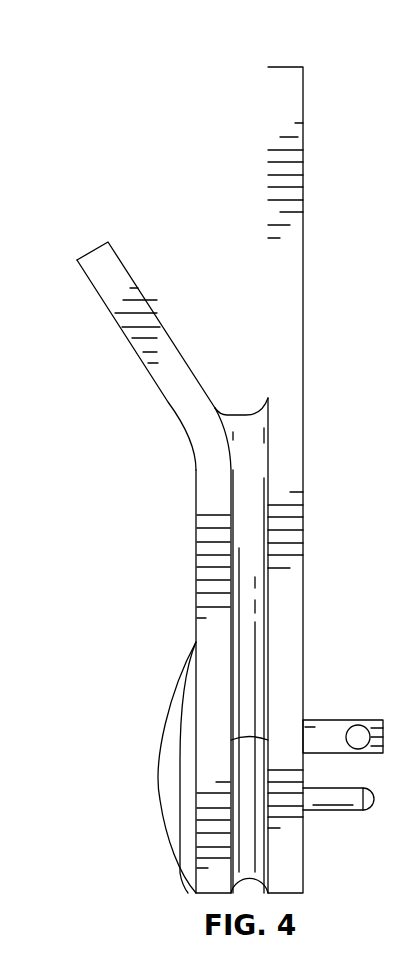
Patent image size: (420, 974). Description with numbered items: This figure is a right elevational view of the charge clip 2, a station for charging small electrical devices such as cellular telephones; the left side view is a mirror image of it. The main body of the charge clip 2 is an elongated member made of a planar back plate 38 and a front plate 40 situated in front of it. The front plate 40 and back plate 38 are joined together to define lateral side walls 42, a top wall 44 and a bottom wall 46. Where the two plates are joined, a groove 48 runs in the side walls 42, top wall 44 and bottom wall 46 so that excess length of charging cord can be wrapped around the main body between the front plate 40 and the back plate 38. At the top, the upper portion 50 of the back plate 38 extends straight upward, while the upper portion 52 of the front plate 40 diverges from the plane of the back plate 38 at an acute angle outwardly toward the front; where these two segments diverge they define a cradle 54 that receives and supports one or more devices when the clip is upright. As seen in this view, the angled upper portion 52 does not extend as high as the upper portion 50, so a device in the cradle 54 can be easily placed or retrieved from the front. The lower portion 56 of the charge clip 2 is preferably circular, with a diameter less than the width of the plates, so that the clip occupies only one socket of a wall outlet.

The charge clip 2 is at (94, 77).
The back plate 38 is at (303, 402).
The front plate 40 is at (197, 488).
The lateral side walls 42 is at (290, 571).
The top wall 44 is at (244, 413).
The bottom wall 46 is at (295, 893).
The groove 48 is at (251, 618).
The upper portion of the back plate 50 is at (303, 100).
The upper portion of the front plate 52 is at (95, 290).
The cradle 54 is at (205, 268).
The lower portion of the charge clip 56 is at (183, 893).